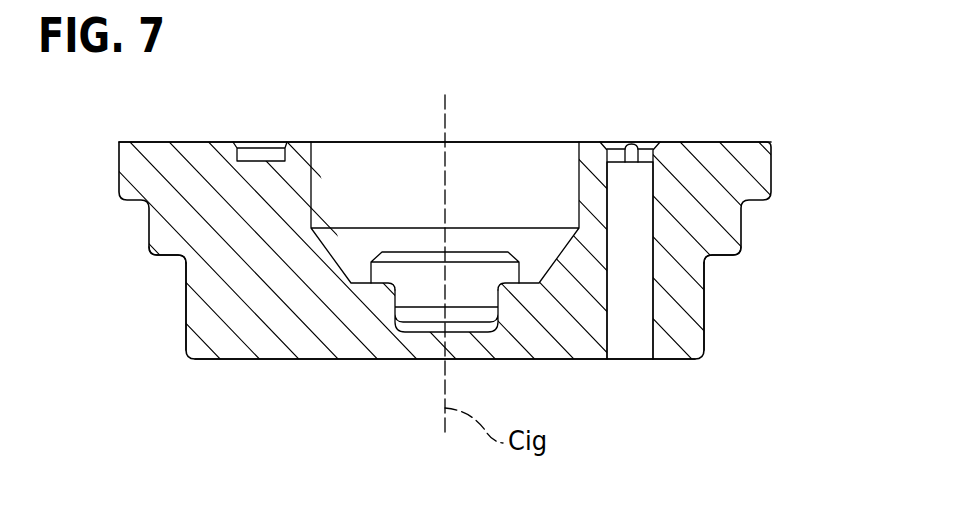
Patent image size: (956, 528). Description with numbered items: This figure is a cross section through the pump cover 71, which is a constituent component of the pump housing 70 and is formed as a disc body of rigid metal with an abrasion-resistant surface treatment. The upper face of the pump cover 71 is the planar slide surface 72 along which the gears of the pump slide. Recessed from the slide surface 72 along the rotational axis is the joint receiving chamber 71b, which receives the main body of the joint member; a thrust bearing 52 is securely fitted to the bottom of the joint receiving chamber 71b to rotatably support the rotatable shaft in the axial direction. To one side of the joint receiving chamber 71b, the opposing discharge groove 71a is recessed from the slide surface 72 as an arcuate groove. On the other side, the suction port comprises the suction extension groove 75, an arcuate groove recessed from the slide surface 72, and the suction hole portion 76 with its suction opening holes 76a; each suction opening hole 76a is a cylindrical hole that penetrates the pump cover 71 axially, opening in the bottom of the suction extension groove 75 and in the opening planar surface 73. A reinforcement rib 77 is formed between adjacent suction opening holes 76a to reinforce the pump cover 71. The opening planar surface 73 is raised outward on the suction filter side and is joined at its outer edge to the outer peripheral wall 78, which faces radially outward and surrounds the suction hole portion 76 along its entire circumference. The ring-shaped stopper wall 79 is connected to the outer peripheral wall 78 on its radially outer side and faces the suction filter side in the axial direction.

The pump housing 70 is at (484, 216).
The pump cover 71 is at (708, 141).
The slide surface 72 is at (198, 142).
The opposing discharge groove 71a is at (257, 142).
The joint receiving chamber 71b is at (312, 172).
The thrust bearing 52 is at (402, 252).
The reinforcement rib 77 is at (618, 215).
The suction hole portion 76 is at (655, 279).
The suction opening hole 76a is at (652, 335).
The suction extension groove 75 is at (642, 142).
The stopper wall 79 is at (162, 256).
The outer peripheral wall 78 is at (186, 317).
The opening planar surface 73 is at (315, 359).